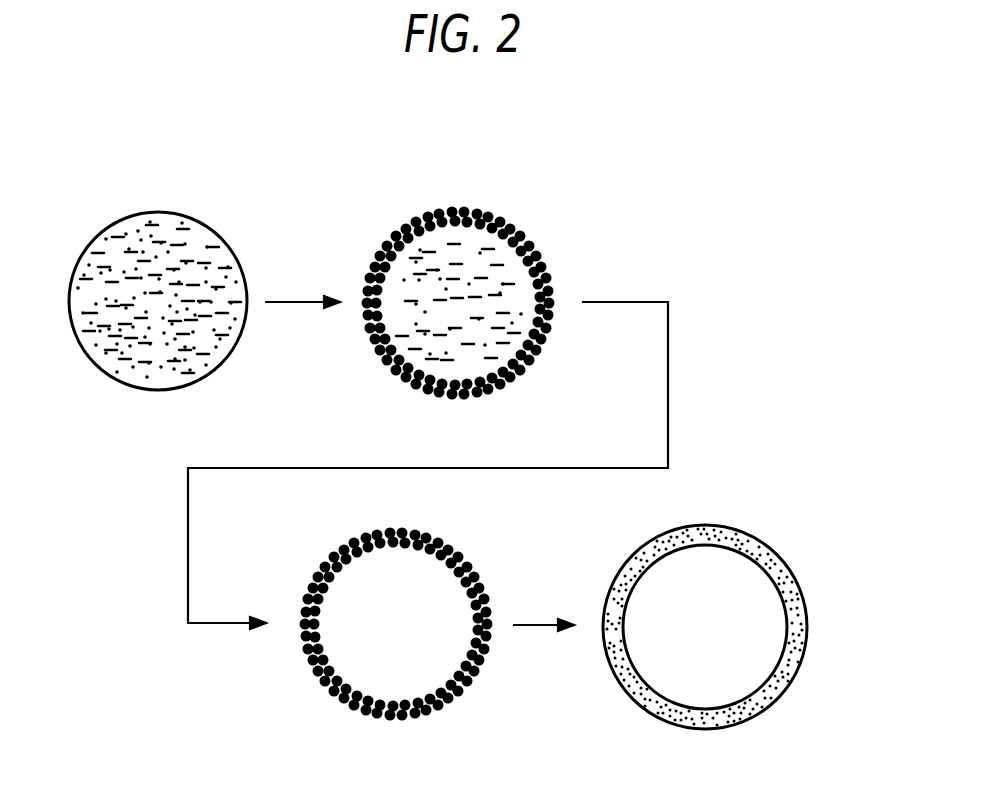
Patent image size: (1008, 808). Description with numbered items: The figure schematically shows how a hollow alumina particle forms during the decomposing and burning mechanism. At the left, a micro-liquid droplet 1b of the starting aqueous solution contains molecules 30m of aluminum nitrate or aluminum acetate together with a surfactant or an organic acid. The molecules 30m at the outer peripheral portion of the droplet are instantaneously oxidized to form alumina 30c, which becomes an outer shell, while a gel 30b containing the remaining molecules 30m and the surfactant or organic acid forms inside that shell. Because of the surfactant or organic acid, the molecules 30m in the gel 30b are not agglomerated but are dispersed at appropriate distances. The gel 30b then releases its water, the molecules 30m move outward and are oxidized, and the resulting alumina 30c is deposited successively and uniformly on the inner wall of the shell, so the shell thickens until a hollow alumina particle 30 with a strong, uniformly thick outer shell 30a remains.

The micro-liquid droplet 1b is at (212, 228).
The gel 30b is at (199, 366).
The molecules of aluminum nitrate or aluminum acetate 30m is at (147, 378).
The alumina 30c is at (503, 230).
The hollow alumina particle 30 is at (730, 556).
The outer shell 30a is at (781, 566).